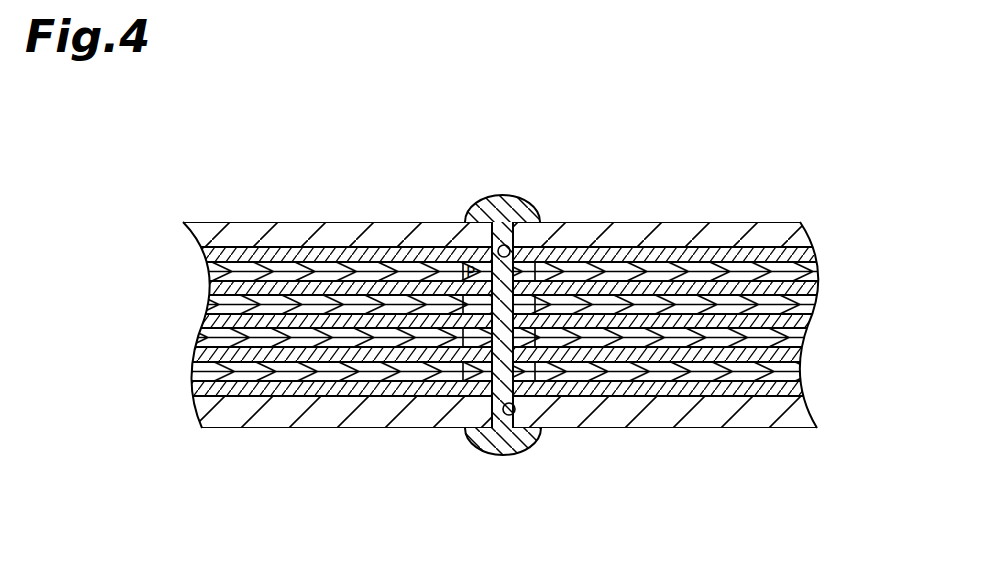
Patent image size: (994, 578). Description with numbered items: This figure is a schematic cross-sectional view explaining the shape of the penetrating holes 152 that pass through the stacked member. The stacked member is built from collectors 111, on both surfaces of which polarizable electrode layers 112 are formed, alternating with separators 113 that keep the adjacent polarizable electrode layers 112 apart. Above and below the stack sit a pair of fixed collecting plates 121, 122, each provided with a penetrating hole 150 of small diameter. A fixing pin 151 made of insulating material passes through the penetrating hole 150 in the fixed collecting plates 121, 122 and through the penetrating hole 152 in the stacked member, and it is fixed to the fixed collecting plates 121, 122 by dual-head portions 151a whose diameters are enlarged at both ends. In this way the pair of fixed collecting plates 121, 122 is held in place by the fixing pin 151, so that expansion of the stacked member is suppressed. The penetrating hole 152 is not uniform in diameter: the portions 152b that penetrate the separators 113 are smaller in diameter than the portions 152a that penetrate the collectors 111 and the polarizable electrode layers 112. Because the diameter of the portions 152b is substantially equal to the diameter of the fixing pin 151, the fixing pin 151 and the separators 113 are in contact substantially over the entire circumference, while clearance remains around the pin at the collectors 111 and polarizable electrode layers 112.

The collector 111 is at (443, 321).
The polarizable electrode layer 112 is at (212, 311).
The separator 113 is at (820, 285).
The fixed collecting plate 121 is at (770, 228).
The fixed collecting plate 122 is at (773, 408).
The penetrating hole 150 is at (534, 344).
The fixing pin 151 is at (500, 372).
The dual-head portion 151a is at (507, 222).
The penetrating hole 152 is at (534, 324).
The portion penetrating the collectors and polarizable electrode layers 152a is at (483, 263).
The portion penetrating the separators 152b is at (514, 402).